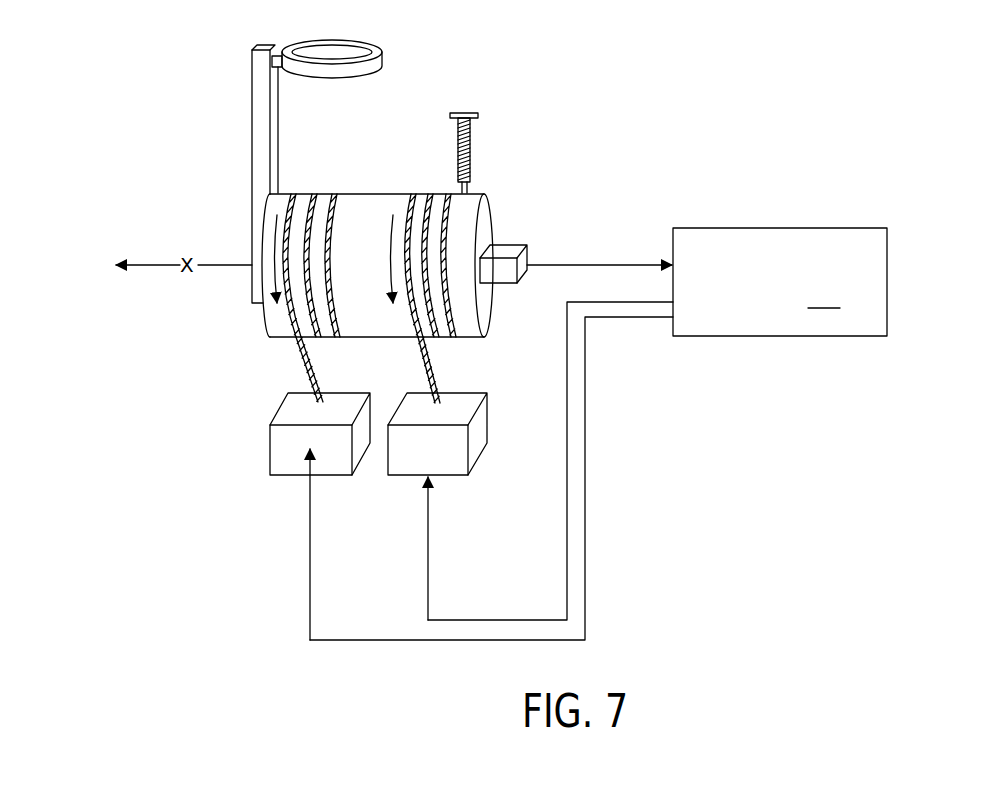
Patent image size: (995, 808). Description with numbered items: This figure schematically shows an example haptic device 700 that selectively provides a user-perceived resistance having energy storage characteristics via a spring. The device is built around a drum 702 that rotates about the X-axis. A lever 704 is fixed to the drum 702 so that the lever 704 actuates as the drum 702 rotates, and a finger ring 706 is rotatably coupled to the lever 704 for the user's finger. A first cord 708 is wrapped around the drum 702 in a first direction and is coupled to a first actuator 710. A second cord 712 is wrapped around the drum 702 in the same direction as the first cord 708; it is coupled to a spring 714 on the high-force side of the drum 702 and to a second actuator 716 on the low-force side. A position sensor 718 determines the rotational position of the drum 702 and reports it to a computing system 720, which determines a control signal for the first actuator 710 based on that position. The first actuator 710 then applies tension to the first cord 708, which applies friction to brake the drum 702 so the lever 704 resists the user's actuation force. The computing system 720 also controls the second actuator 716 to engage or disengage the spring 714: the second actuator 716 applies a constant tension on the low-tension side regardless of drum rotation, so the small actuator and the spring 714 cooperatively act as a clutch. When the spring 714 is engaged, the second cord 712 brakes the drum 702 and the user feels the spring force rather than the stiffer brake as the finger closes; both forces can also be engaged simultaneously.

The haptic device 700 is at (768, 113).
The drum 702 is at (268, 332).
The lever 704 is at (256, 152).
The finger ring 706 is at (320, 42).
The first cord 708 is at (298, 193).
The first actuator 710 is at (270, 442).
The second cord 712 is at (412, 193).
The spring 714 is at (470, 143).
The second actuator 716 is at (482, 430).
The position sensor 718 is at (500, 245).
The computing system 720 is at (780, 282).